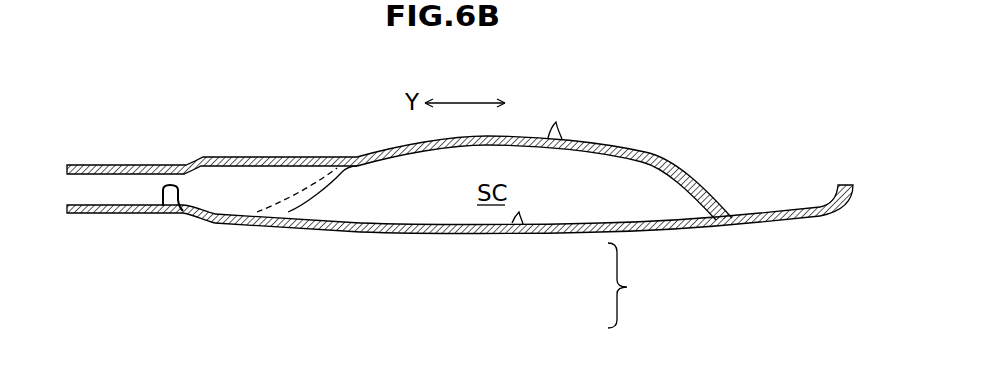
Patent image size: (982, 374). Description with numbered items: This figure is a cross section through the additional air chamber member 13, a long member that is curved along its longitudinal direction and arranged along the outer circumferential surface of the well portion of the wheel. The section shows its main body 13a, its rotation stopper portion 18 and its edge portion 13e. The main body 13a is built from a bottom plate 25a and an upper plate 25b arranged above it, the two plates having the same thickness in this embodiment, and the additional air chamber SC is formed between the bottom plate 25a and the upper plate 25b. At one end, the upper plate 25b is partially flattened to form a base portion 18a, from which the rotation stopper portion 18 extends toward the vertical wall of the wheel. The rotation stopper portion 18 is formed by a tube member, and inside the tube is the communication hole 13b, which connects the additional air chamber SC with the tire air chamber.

The additional air chamber member 13 is at (612, 147).
The main body 13a is at (643, 285).
The communication hole 13b is at (136, 202).
The edge portion 13e is at (223, 212).
The rotation stopper portion 18 is at (128, 165).
The base portion 18a is at (306, 157).
The bottom plate 25a is at (518, 214).
The upper plate 25b is at (556, 124).